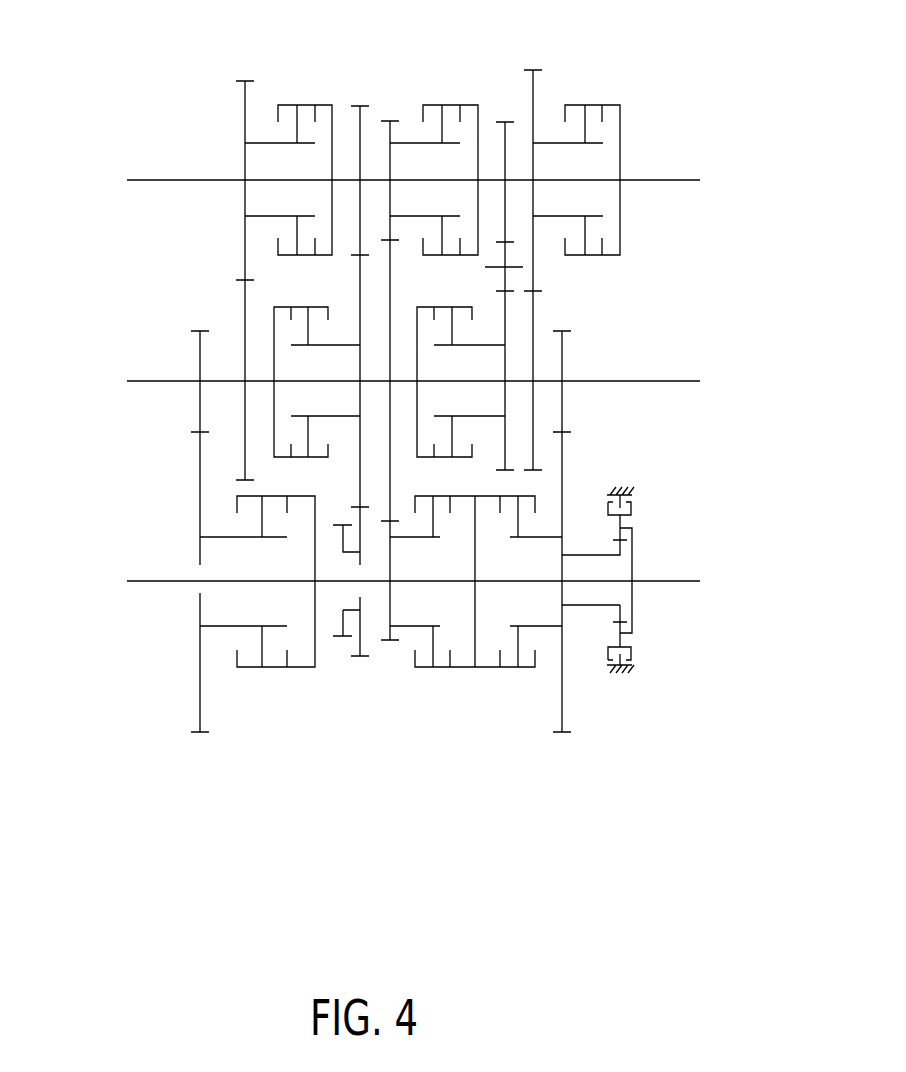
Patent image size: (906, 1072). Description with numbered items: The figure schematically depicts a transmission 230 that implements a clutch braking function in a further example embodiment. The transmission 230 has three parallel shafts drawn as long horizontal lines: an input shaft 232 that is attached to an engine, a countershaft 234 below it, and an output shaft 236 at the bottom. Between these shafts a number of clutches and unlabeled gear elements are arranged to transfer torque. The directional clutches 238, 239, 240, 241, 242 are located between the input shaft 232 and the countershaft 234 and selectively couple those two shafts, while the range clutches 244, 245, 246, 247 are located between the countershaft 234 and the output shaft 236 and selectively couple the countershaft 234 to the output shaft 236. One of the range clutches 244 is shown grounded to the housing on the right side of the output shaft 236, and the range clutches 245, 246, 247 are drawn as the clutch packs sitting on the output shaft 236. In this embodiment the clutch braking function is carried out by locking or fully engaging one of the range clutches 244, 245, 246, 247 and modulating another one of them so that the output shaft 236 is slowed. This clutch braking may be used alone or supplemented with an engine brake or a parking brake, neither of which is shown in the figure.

The transmission 230 is at (114, 129).
The input shaft 232 is at (672, 180).
The countershaft 234 is at (672, 381).
The output shaft 236 is at (672, 581).
The directional clutch 238 is at (453, 94).
The directional clutch 239 is at (284, 296).
The directional clutch 240 is at (306, 94).
The directional clutch 241 is at (594, 94).
The directional clutch 242 is at (462, 296).
The range clutch 244 is at (633, 481).
The range clutch 245 is at (276, 491).
The range clutch 246 is at (499, 674).
The range clutch 247 is at (439, 678).